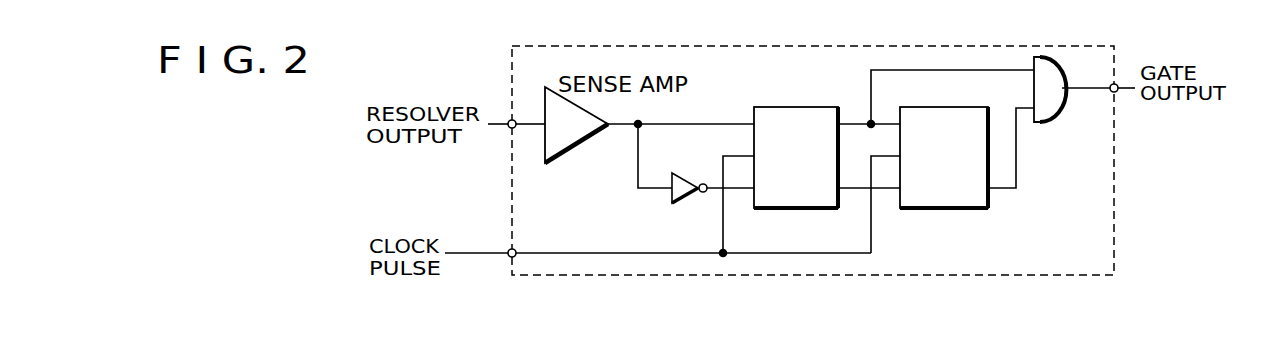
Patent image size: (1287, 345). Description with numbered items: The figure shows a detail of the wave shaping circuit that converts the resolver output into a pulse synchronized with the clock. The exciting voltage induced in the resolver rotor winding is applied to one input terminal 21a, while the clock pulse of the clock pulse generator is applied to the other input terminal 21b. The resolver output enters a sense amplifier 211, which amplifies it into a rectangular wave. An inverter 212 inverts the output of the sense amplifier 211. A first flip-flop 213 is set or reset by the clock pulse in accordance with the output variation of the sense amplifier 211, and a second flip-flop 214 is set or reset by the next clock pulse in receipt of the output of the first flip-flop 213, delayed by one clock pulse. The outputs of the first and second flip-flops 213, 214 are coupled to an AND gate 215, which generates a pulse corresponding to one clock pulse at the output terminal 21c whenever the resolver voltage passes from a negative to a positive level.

The input terminal 21a is at (509, 127).
The input terminal 21b is at (510, 250).
The output terminal 21c is at (1118, 85).
The sense amplifier 211 is at (570, 150).
The inverter 212 is at (682, 174).
The first flip-flop 213 is at (809, 107).
The second flip-flop 214 is at (955, 209).
The AND gate 215 is at (1052, 103).